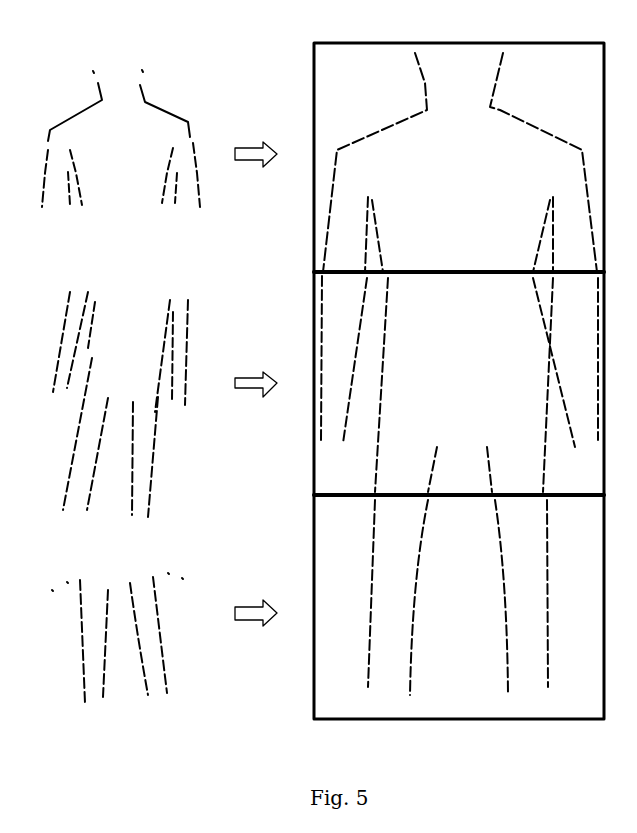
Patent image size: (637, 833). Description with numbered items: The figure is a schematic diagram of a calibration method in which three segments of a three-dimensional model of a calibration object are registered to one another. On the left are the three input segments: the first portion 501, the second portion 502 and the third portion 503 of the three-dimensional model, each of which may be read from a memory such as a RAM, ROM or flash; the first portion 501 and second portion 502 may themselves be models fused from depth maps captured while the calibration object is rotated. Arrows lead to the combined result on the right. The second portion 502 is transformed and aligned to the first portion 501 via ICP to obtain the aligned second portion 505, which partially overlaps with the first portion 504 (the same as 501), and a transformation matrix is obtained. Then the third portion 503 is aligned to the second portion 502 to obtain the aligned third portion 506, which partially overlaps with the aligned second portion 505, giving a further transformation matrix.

The first portion of the three-dimensional model of the calibration object 501 is at (115, 138).
The second portion of the three-dimensional model of the calibration object 502 is at (107, 404).
The third portion of the three-dimensional model of the calibration object 503 is at (117, 627).
The first portion in the aligned result 504 is at (460, 162).
The aligned second portion 505 is at (459, 384).
The aligned third portion 506 is at (437, 606).